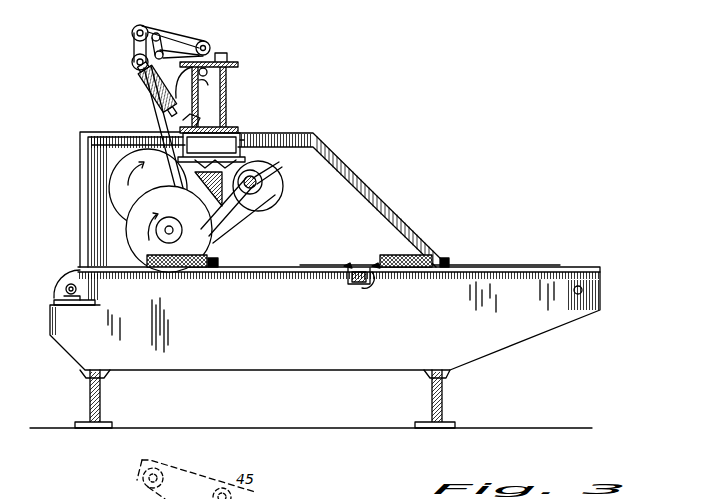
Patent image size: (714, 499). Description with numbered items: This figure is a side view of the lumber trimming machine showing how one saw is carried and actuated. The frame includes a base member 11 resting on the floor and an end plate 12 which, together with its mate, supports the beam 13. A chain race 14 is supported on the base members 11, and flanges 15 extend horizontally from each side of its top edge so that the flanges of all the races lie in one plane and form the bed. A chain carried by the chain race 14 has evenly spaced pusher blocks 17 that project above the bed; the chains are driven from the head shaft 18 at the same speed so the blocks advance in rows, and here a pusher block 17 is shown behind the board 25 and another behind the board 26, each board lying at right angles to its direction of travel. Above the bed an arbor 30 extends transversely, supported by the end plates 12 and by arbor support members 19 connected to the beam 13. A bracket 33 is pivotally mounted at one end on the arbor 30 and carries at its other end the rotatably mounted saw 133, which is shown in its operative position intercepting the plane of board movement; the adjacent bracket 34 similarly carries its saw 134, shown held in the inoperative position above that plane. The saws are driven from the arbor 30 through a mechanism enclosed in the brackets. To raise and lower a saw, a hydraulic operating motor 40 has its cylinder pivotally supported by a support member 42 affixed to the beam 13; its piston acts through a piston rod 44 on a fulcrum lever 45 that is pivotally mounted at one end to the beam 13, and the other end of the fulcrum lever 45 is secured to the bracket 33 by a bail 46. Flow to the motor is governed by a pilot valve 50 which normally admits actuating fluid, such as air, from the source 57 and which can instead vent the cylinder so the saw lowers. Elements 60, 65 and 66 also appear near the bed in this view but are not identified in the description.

The base members 11 is at (100, 398).
The end plates 12 is at (377, 190).
The beam 13 is at (228, 100).
The chain races 14 is at (545, 323).
The flanges 15 is at (536, 267).
The pusher blocks 17 is at (220, 258).
The head shaft 18 is at (68, 280).
The arbor support members 19 is at (211, 147).
The board 25 is at (178, 268).
The board 26 is at (410, 268).
The arbor 30 is at (252, 205).
The bracket member 33 is at (262, 195).
The bracket member 34 is at (250, 145).
The hydraulic operating motor 40 is at (158, 94).
The support member 42 is at (201, 119).
The piston rod 44 is at (133, 38).
The fulcrum lever 45 is at (158, 22).
The bail 46 is at (150, 88).
The pilot valve 50 is at (210, 87).
The source 57 is at (211, 72).
The tray 60 is at (352, 286).
The guide 65 is at (346, 262).
The guide 66 is at (376, 263).
The saw 133 is at (138, 254).
The saw 134 is at (122, 216).